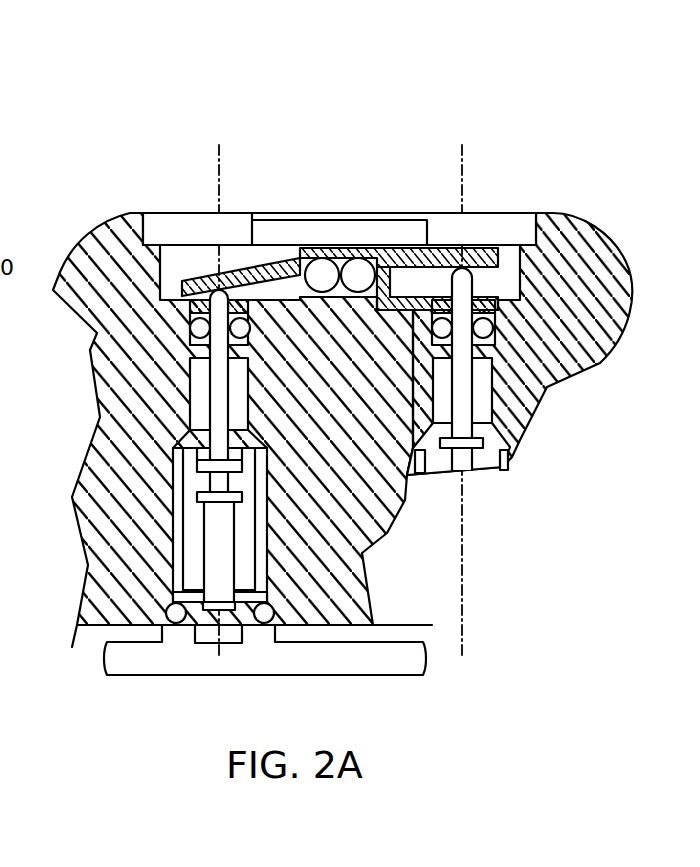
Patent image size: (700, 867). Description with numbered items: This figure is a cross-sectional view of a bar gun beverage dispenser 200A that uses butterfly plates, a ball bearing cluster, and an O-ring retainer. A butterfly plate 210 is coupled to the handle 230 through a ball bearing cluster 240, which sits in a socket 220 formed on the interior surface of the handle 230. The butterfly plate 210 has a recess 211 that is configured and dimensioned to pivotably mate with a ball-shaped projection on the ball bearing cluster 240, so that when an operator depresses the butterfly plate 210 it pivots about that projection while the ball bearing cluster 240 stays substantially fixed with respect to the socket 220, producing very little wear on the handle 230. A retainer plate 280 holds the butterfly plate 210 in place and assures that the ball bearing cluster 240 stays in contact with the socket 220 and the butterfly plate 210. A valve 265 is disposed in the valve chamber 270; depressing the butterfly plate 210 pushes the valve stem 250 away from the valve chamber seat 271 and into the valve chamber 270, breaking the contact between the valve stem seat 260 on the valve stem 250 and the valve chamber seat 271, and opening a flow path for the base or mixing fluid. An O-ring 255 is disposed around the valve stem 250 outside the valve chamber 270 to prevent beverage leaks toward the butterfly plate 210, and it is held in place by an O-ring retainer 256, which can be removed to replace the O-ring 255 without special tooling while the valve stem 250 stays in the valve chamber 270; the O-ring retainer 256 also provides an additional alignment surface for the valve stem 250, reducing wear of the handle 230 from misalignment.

The bar gun beverage dispenser 200A is at (472, 104).
The retainer plate 280 is at (270, 232).
The butterfly plate 210 is at (196, 279).
The recess 211 is at (320, 256).
The ball bearing cluster 240 is at (360, 260).
The socket 220 is at (358, 294).
The handle 230 is at (598, 283).
The O-ring retainer 256 is at (190, 309).
The O-ring 255 is at (193, 330).
The valve chamber 270 is at (190, 378).
The valve stem 250 is at (205, 407).
The valve chamber seat 271 is at (175, 442).
The valve stem seat 260 is at (174, 461).
The valve 265 is at (215, 547).